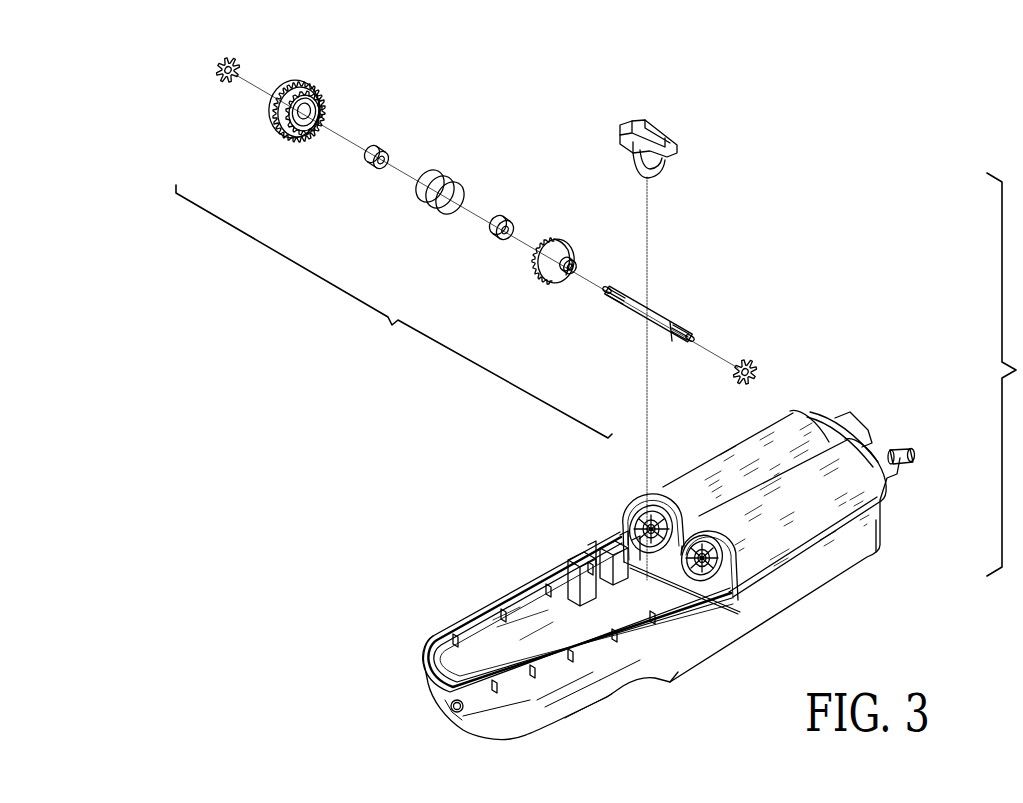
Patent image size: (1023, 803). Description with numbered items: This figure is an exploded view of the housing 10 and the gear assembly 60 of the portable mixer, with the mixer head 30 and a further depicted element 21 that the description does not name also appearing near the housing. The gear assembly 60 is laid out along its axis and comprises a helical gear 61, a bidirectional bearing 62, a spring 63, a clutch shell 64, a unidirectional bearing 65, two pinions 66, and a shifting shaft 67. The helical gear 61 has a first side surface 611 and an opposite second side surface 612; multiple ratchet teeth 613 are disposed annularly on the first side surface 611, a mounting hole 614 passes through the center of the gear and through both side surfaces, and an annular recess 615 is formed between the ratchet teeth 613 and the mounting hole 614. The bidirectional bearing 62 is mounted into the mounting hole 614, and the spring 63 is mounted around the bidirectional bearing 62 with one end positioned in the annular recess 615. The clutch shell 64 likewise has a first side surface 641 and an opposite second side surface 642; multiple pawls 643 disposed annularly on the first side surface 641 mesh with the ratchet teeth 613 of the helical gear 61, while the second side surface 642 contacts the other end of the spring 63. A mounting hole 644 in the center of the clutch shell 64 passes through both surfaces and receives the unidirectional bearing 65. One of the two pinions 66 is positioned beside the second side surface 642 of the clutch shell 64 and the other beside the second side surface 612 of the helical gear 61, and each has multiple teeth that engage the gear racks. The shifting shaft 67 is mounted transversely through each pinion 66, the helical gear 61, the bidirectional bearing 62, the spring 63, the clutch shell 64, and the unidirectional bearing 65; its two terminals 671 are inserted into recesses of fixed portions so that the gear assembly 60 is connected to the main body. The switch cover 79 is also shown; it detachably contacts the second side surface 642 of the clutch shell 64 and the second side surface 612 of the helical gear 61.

The housing 10 is at (818, 600).
The motor 21 is at (868, 485).
The mixer head 30 is at (895, 445).
The gear assembly 60 is at (394, 311).
The helical gear 61 is at (323, 109).
The first side surface 611 is at (306, 136).
The second side surface 612 is at (303, 90).
The ratchet teeth 613 is at (292, 140).
The mounting hole 614 is at (322, 108).
The annular recess 615 is at (318, 118).
The bidirectional bearing 62 is at (386, 150).
The spring 63 is at (450, 178).
The clutch shell 64 is at (558, 237).
The first side surface 641 is at (555, 240).
The second side surface 642 is at (576, 258).
The pawls 643 is at (538, 258).
The mounting hole 644 is at (568, 242).
The unidirectional bearing 65 is at (493, 232).
The pinions 66 is at (216, 70).
The shifting shaft 67 is at (685, 305).
The terminals 671 is at (682, 325).
The switch cover 79 is at (673, 169).